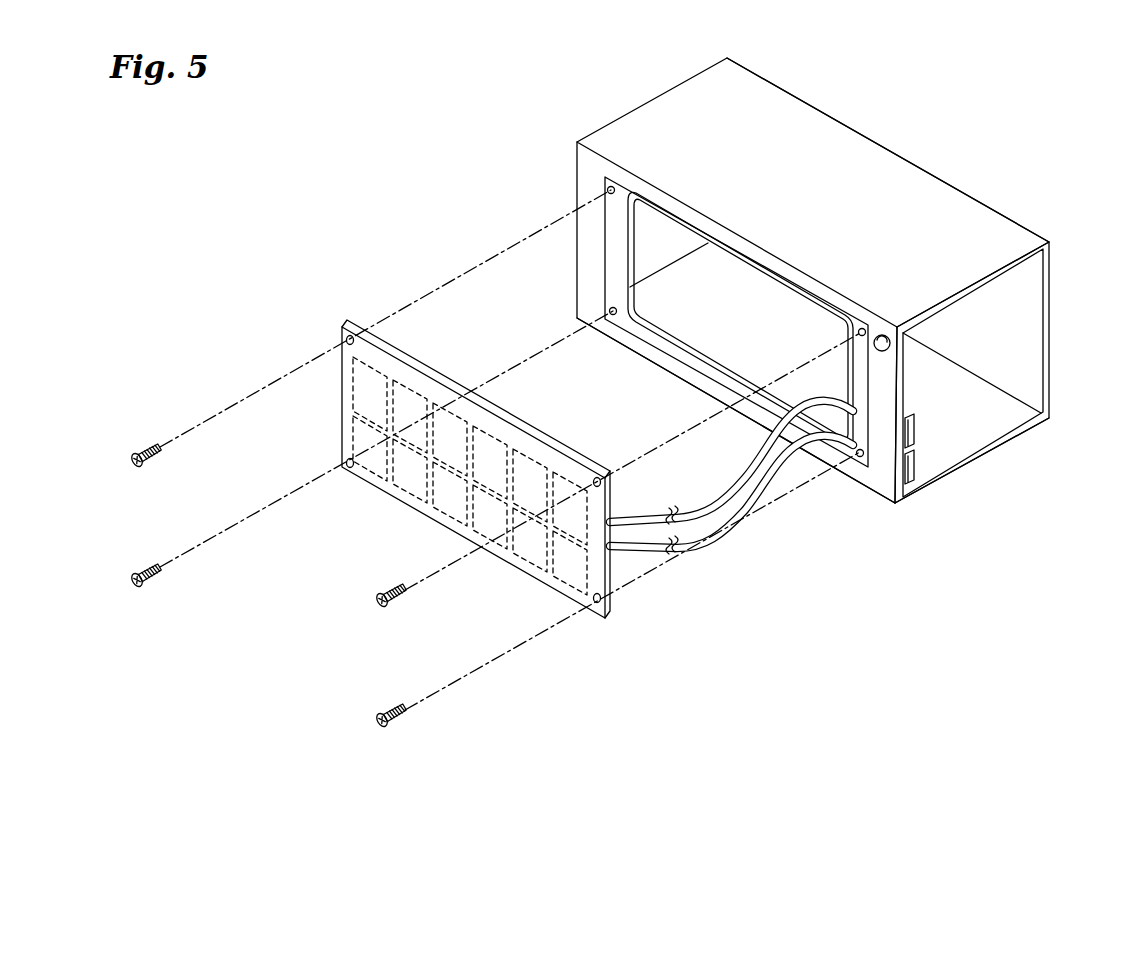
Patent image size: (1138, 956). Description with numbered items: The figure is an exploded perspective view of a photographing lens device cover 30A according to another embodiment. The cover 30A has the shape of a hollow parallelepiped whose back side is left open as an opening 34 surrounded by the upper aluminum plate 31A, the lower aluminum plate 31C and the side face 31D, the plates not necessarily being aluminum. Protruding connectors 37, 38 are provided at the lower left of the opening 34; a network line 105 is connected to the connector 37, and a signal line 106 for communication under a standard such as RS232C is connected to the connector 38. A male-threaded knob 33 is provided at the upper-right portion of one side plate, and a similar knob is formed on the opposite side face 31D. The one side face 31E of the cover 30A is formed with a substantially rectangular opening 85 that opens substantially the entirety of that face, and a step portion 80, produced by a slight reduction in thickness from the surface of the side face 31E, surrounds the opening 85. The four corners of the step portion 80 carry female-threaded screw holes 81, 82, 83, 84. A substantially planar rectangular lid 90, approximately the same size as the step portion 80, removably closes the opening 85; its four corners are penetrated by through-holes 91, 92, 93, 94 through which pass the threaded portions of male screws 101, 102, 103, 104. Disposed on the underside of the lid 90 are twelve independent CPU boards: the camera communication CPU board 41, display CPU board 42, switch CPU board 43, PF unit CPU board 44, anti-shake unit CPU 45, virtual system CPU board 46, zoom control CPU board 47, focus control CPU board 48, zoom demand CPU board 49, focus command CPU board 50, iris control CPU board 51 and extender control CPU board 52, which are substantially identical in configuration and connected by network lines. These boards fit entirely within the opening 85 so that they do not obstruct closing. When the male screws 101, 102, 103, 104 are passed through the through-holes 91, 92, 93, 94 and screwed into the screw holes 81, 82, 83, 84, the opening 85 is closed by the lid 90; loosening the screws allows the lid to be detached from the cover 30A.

The photographing lens device cover 30A is at (912, 150).
The aluminum plate 31A is at (1004, 232).
The aluminum plate 31C is at (958, 474).
The side face 31D is at (1050, 331).
The one side face 31E is at (881, 470).
The knob 33 is at (877, 336).
The opening 34 is at (994, 437).
The connector 37 is at (914, 463).
The connector 38 is at (911, 422).
The camera communication CPU board 41 is at (578, 605).
The display CPU board 42 is at (540, 550).
The switch CPU board 43 is at (495, 520).
The PF unit CPU board 44 is at (433, 500).
The anti-shake unit CPU 45 is at (398, 478).
The virtual system CPU board 46 is at (356, 473).
The zoom control CPU board 47 is at (364, 378).
The focus control CPU board 48 is at (413, 405).
The zoom demand CPU board 49 is at (456, 412).
The focus command CPU board 50 is at (496, 450).
The iris control CPU board 51 is at (537, 455).
The extender control CPU board 52 is at (579, 478).
The step portion 80 is at (683, 355).
The screw hole 81 is at (613, 189).
The screw hole 82 is at (860, 327).
The screw hole 83 is at (860, 458).
The screw hole 84 is at (626, 312).
The opening 85 is at (722, 364).
The lid 90 is at (470, 530).
The through-hole 91 is at (347, 337).
The through-hole 92 is at (602, 481).
The through-hole 93 is at (602, 603).
The through-hole 94 is at (345, 461).
The male screw 101 is at (132, 456).
The male screw 102 is at (374, 604).
The male screw 103 is at (374, 725).
The male screw 104 is at (130, 587).
The network line 105 is at (744, 528).
The signal line 106 is at (697, 531).